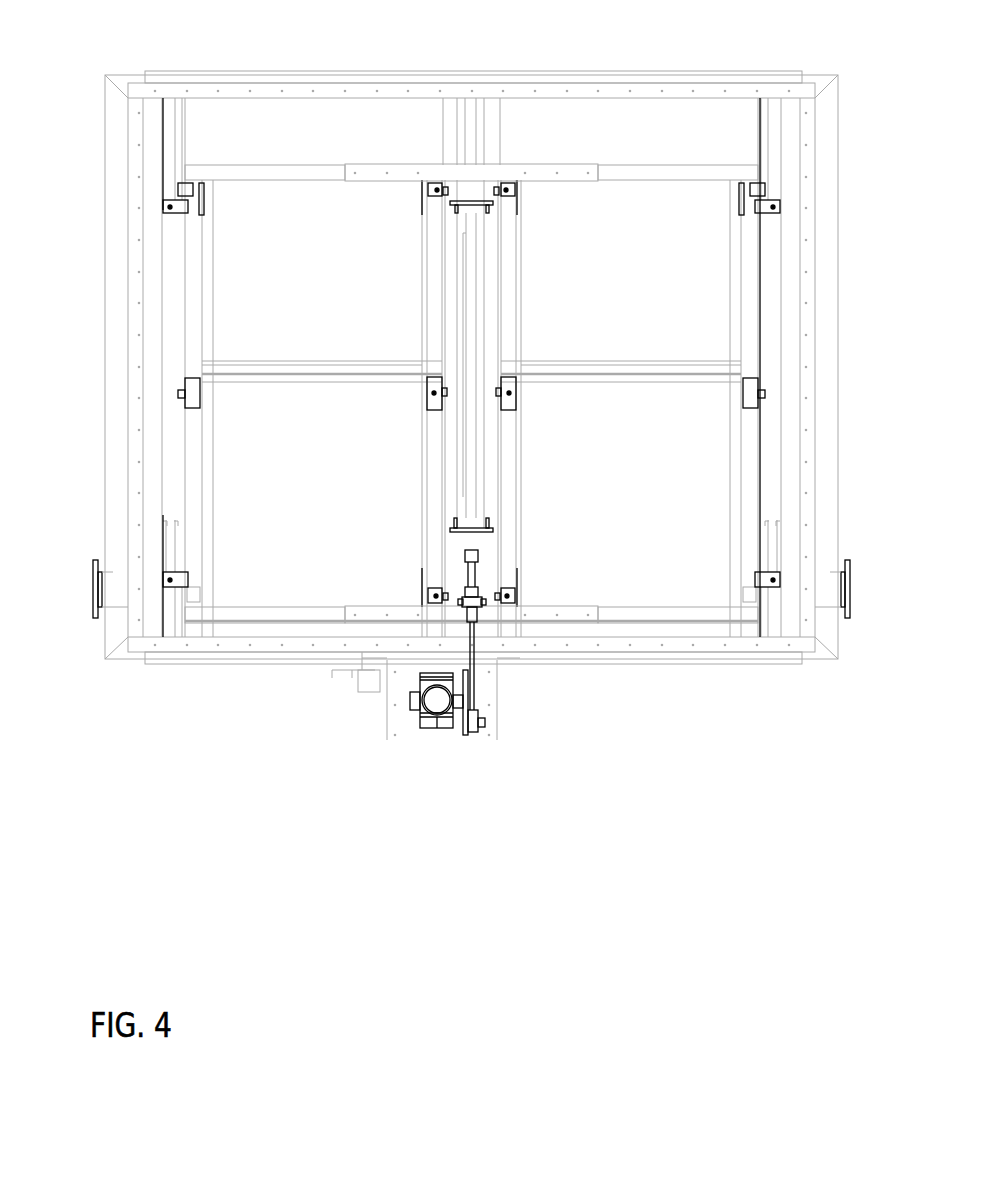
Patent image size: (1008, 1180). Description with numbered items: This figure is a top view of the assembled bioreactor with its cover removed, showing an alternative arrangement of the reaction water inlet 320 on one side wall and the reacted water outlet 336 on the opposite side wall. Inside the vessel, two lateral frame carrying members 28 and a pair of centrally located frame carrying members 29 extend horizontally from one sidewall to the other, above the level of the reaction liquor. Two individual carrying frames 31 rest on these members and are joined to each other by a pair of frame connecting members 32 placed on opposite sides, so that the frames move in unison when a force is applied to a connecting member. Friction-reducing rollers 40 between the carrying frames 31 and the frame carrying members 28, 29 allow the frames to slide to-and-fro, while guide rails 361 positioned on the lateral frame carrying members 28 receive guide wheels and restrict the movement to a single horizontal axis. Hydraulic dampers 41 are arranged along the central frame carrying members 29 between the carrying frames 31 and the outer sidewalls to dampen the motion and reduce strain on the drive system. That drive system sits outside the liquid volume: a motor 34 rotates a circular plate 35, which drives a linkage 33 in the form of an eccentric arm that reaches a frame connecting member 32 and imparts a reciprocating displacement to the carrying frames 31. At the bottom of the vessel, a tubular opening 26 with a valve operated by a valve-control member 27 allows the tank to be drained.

The tubular opening 26 is at (368, 693).
The valve-control member 27 is at (340, 678).
The lateral frame carrying member 28 is at (173, 283).
The central frame carrying member 29 is at (450, 103).
The carrying frame 31 is at (317, 163).
The frame connecting member 32 is at (543, 161).
The linkage 33 is at (477, 680).
The motor 34 is at (436, 735).
The circular plate 35 is at (467, 735).
The friction-reducing roller 40 is at (440, 197).
The hydraulic damper 41 is at (480, 228).
The reaction water inlet 320 is at (95, 560).
The reacted water outlet 336 is at (845, 560).
The guide rail 361 is at (175, 146).